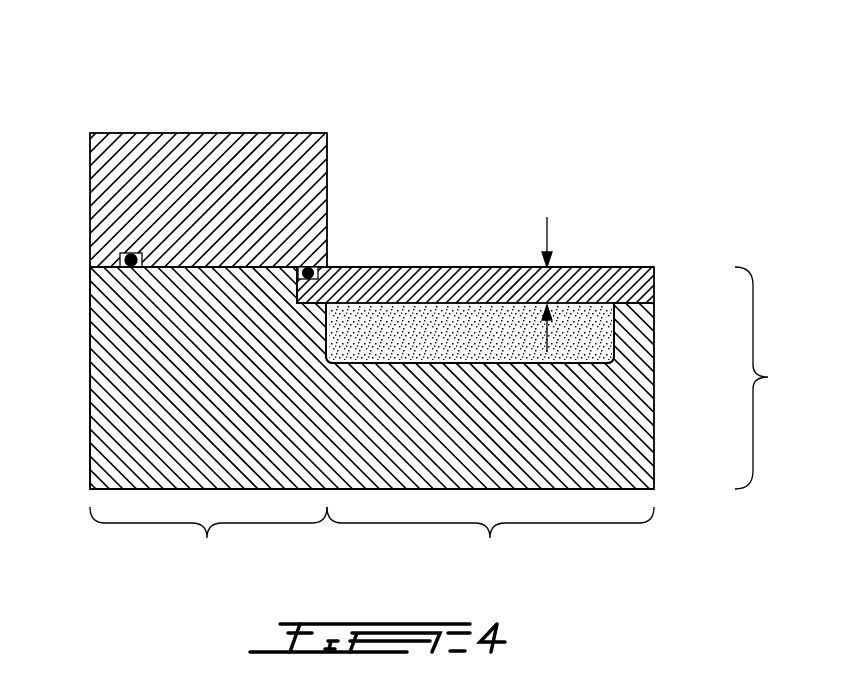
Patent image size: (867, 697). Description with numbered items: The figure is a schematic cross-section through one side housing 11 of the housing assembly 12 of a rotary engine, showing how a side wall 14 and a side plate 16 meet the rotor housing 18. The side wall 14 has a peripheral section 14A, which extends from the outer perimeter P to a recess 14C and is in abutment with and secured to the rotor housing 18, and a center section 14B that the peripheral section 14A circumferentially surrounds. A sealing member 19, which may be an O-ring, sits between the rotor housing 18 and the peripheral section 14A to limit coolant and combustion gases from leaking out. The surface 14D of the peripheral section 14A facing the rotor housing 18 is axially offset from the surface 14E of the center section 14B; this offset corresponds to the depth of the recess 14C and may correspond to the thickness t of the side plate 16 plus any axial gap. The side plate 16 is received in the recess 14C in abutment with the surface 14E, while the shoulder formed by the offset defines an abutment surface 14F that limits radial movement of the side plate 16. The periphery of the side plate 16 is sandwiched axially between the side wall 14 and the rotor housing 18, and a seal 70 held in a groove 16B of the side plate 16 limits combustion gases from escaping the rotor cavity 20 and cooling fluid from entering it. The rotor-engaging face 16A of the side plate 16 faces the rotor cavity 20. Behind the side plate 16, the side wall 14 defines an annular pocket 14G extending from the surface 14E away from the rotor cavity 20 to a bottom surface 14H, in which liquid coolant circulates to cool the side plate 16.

The side housing 11 is at (767, 378).
The housing assembly 12 is at (510, 134).
The side wall 14 is at (122, 463).
The peripheral section 14A is at (208, 540).
The center section 14B is at (490, 540).
The recess 14C is at (632, 312).
The surface of the peripheral section 14D is at (172, 268).
The surface of the center section 14E is at (312, 305).
The abutment surface 14F is at (297, 290).
The pocket 14G is at (588, 350).
The bottom surface of the pocket 14H is at (415, 362).
The side plate 16 is at (597, 290).
The rotor-engaging face 16A is at (378, 267).
The groove 16B is at (306, 268).
The rotor housing 18 is at (143, 133).
The sealing member 19 is at (122, 257).
The rotor cavity 20 is at (449, 204).
The seal 70 is at (308, 273).
The thickness of the side plate t is at (547, 230).
The outer perimeter P is at (90, 428).